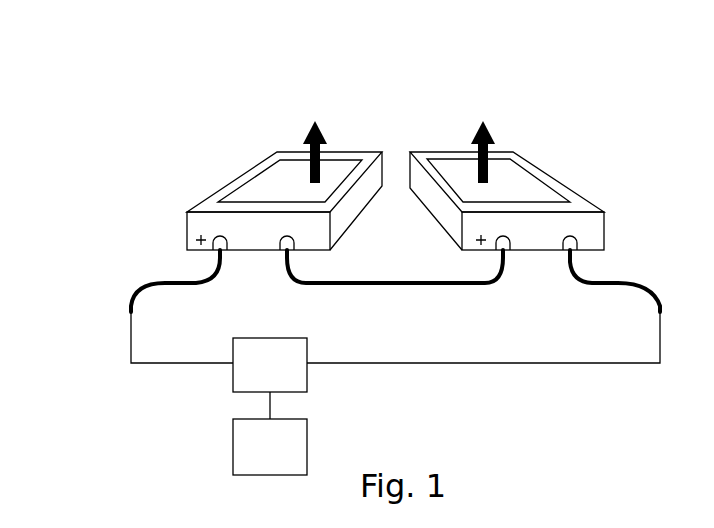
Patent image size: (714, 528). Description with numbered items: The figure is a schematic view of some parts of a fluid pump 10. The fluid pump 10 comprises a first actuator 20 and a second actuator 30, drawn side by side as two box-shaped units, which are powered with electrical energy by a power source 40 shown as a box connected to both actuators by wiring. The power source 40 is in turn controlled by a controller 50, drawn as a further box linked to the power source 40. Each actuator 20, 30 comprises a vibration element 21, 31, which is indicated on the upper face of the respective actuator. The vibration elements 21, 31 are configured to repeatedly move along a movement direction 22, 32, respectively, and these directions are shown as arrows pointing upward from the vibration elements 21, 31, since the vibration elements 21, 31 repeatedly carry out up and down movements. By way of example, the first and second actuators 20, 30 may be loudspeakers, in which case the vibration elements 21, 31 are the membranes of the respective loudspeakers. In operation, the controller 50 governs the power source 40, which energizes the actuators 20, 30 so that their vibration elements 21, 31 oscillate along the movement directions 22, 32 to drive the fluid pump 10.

The fluid pump 10 is at (174, 76).
The first actuator 20 is at (217, 195).
The vibration element 21 is at (267, 178).
The movement direction 22 is at (323, 138).
The second actuator 30 is at (568, 192).
The vibration element 31 is at (453, 170).
The movement direction 32 is at (489, 140).
The power source 40 is at (238, 374).
The controller 50 is at (240, 452).